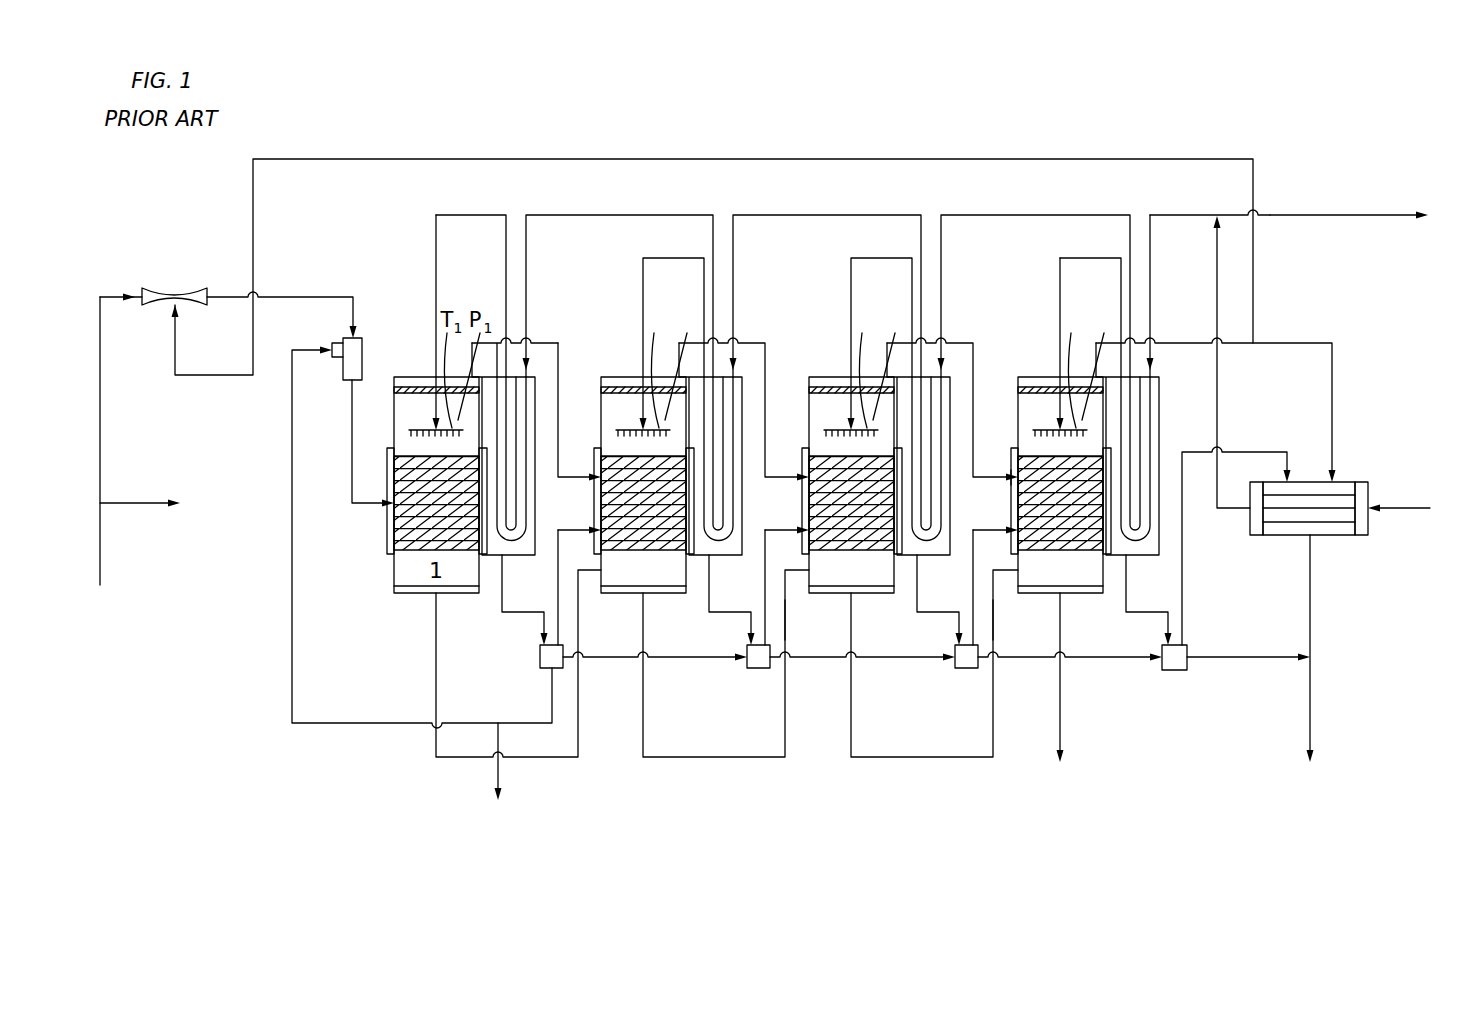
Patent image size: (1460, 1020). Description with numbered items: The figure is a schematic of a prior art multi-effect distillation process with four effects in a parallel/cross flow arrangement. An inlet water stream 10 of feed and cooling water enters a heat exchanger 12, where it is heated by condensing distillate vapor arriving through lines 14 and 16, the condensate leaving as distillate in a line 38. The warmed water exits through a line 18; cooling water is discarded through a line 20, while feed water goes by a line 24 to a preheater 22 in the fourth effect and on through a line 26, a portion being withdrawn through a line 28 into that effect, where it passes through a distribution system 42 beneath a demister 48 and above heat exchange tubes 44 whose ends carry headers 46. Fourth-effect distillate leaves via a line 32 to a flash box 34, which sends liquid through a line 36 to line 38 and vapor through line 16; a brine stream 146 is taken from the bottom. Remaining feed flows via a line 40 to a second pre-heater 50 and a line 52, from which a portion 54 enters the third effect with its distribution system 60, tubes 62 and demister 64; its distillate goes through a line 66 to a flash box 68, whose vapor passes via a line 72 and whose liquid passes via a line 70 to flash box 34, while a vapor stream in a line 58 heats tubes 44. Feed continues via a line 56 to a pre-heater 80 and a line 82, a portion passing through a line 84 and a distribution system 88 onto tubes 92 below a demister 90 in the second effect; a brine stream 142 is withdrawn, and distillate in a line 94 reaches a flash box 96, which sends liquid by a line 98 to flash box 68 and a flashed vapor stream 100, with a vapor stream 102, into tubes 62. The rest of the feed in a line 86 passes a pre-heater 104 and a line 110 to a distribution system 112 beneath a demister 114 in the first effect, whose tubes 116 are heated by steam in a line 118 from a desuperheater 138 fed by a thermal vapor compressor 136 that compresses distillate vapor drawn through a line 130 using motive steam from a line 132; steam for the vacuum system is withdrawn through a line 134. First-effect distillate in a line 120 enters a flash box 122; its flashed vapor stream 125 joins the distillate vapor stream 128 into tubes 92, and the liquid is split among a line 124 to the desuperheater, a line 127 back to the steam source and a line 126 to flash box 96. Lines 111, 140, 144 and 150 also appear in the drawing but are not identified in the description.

The inlet water stream 10 is at (1400, 508).
The heat exchanger 12 is at (1330, 537).
The line 14 is at (1333, 452).
The line 16 is at (1185, 582).
The line 18 is at (1215, 284).
The line 20 is at (1325, 213).
The preheater 22 is at (1160, 402).
The line 24 is at (1152, 323).
The line 26 is at (1120, 303).
The line 28 is at (1055, 290).
The line 32 is at (1130, 612).
The flash box 34 is at (1170, 670).
The line 36 is at (1232, 660).
The line 38 is at (1312, 612).
The line 40 is at (1043, 213).
The distribution system 42 is at (1045, 386).
The heat exchange section 44 is at (1008, 481).
The header 46 is at (356, 477).
The demister 48 is at (1010, 388).
The second pre-heater 50 is at (935, 556).
The line 52 is at (913, 300).
The portion 54 is at (865, 258).
The line 56 is at (848, 213).
The line 58 is at (956, 343).
The distribution system 60 is at (838, 386).
The tubes 62 is at (805, 503).
The demister 64 is at (808, 388).
The line 66 is at (933, 613).
The flash box 68 is at (957, 668).
The line 70 is at (1027, 660).
The line 72 is at (1008, 533).
The pre-heater 80 is at (745, 552).
The line 82 is at (706, 296).
The line 84 is at (658, 258).
The line 86 is at (645, 213).
The distribution system 88 is at (625, 372).
The demister 90 is at (600, 386).
The tubes 92 is at (596, 509).
The line 94 is at (728, 613).
The flash box 96 is at (748, 668).
The line 98 is at (822, 660).
The flashed vapor stream 100 is at (787, 598).
The vapor stream 102 is at (756, 343).
The pre-heater 104 is at (536, 553).
The line 110 is at (480, 213).
The first reactor inlet line 111 is at (434, 262).
The distribution system 112 is at (430, 375).
The demister 114 is at (398, 388).
The tubes 116 is at (405, 530).
The line 118 is at (352, 503).
The line 120 is at (525, 613).
The flash box 122 is at (540, 668).
The line 124 is at (378, 724).
The flashed vapor stream 125 is at (560, 600).
The line 126 is at (622, 660).
The line 127 is at (497, 782).
The distillate vapor stream 128 is at (540, 343).
The line 130 is at (205, 377).
The line 132 is at (103, 566).
The line 134 is at (148, 502).
The thermal vapor compressor 136 is at (172, 287).
The desuperheater 138 is at (345, 373).
The first reactor bottom line 140 is at (522, 760).
The brine stream 142 is at (710, 760).
The third reactor bottom line 144 is at (895, 760).
The brine stream 146 is at (1063, 737).
The fourth stage outlet line 150 is at (1192, 213).